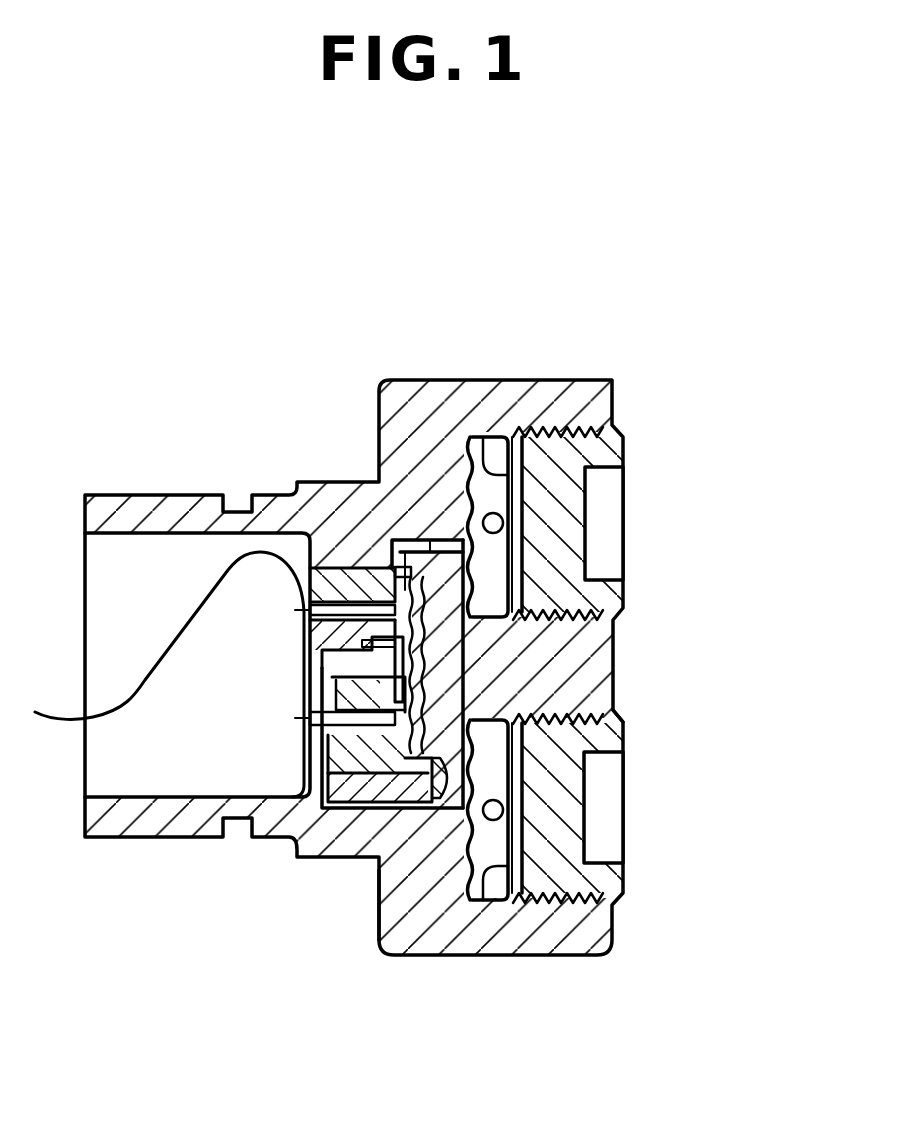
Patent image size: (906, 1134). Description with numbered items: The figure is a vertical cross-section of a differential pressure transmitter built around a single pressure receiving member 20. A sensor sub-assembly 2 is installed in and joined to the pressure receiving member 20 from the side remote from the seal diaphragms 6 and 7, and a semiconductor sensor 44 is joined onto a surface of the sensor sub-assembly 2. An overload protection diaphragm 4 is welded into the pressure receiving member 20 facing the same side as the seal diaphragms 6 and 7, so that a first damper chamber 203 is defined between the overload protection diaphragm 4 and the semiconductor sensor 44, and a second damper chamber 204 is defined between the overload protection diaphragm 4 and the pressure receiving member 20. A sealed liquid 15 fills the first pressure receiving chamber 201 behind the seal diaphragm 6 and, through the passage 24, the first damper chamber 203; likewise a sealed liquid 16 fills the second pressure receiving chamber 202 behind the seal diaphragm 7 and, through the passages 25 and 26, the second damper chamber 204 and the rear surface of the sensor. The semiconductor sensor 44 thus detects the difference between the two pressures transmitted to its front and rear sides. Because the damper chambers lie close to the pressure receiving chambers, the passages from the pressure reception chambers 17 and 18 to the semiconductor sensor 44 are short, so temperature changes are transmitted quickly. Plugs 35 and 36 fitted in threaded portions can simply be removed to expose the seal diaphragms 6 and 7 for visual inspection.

The sensor sub-assembly 2 is at (400, 545).
The overload protection diaphragm 4 is at (540, 670).
The seal diaphragm 6 is at (503, 455).
The seal diaphragm 7 is at (583, 797).
The sealed liquid 15 is at (437, 530).
The sealed liquid 16 is at (400, 812).
The pressure reception chamber 17 is at (687, 488).
The pressure reception chamber 18 is at (665, 860).
The pressure receiving member 20 is at (500, 380).
The passage 24 is at (347, 562).
The passage 25 is at (441, 810).
The passage 26 is at (357, 803).
The plug 35 is at (627, 542).
The plug 36 is at (627, 738).
The semiconductor sensor 44 is at (570, 607).
The first pressure receiving chamber 201 is at (657, 457).
The second pressure receiving chamber 202 is at (513, 957).
The first damper chamber 203 is at (290, 843).
The second damper chamber 204 is at (540, 690).